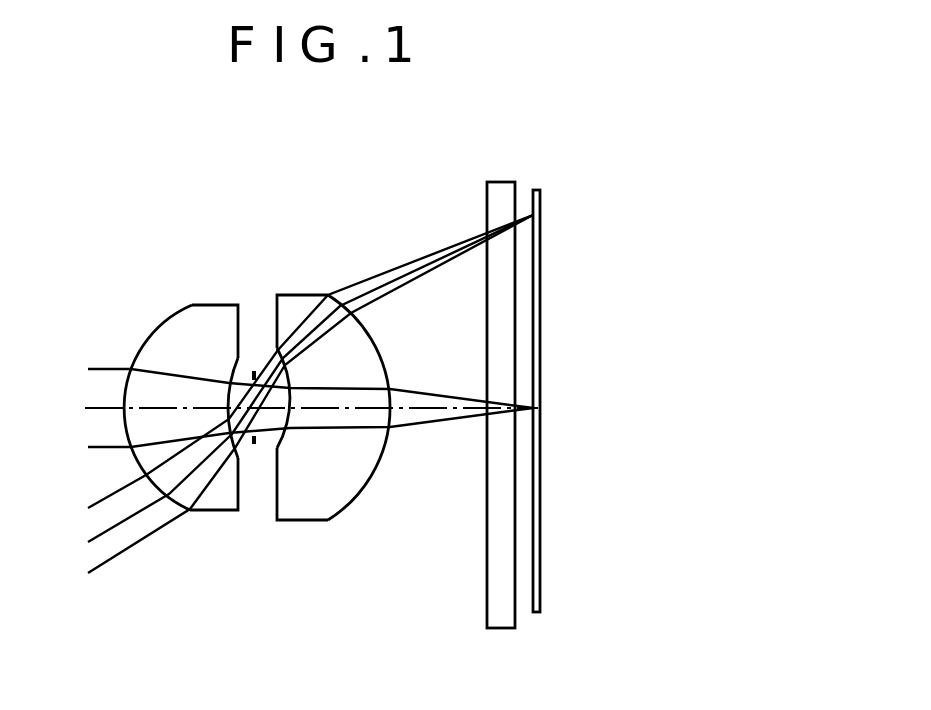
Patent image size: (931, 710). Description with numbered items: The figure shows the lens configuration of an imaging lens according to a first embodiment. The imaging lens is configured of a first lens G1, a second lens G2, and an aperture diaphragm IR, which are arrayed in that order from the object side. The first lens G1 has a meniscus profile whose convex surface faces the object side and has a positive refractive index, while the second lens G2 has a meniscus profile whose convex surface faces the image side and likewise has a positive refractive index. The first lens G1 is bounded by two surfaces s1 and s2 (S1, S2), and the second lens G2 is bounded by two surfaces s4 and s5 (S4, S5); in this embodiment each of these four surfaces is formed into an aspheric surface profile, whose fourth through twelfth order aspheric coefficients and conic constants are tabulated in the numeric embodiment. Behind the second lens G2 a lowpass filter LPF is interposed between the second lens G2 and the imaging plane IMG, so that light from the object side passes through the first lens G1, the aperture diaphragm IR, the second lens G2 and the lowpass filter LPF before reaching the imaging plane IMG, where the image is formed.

The first lens G1 is at (166, 401).
The second lens G2 is at (363, 399).
The aperture diaphragm IR is at (253, 374).
The surface s1 S1 is at (160, 327).
The surface s2 S2 is at (240, 445).
The surface s4 S4 is at (279, 450).
The surface s5 S5 is at (385, 452).
The lowpass filter LPF is at (500, 182).
The imaging plane IMG is at (533, 193).